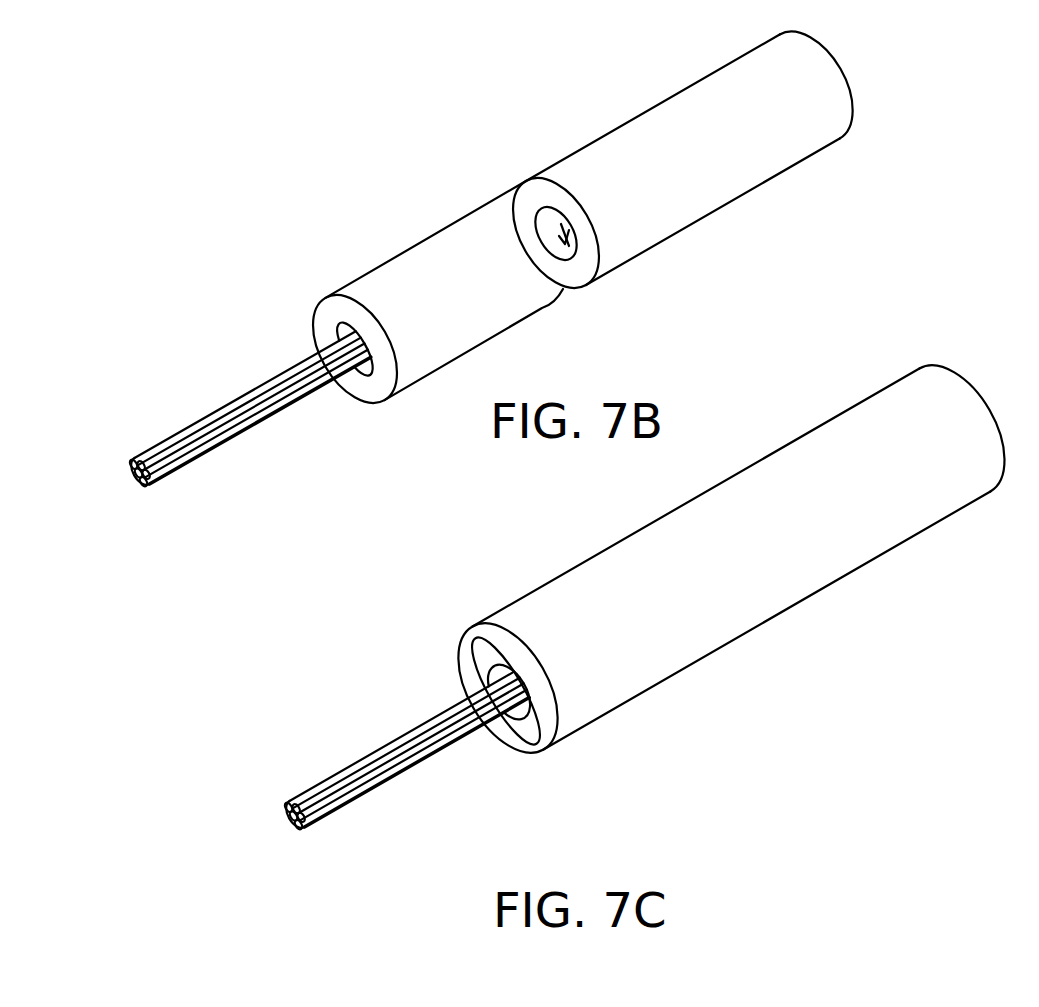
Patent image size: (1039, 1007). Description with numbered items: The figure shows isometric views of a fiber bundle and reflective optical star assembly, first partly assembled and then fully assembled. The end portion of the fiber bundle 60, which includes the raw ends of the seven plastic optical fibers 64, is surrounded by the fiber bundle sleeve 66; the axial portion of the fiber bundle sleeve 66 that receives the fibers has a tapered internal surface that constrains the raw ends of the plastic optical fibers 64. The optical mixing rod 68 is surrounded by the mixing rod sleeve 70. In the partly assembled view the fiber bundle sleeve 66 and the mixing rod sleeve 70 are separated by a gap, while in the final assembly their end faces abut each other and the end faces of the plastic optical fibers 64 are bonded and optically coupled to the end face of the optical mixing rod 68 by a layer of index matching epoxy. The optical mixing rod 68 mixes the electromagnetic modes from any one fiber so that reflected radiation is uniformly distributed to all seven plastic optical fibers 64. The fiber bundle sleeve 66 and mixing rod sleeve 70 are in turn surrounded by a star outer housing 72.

In FIG. 7B, the fiber bundle 60 is at (177, 427).
In FIG. 7C, the fiber bundle 60 is at (365, 752).
In FIG. 7B, the plastic optical fibers 64 is at (190, 465).
In FIG. 7C, the plastic optical fibers 64 is at (338, 812).
In FIG. 7B, the fiber bundle sleeve 66 is at (455, 222).
In FIG. 7C, the fiber bundle sleeve 66 is at (487, 658).
In FIG. 7B, the optical mixing rod 68 is at (560, 237).
In FIG. 7B, the mixing rod sleeve 70 is at (773, 180).
In FIG. 7C, the star outer housing 72 is at (848, 577).